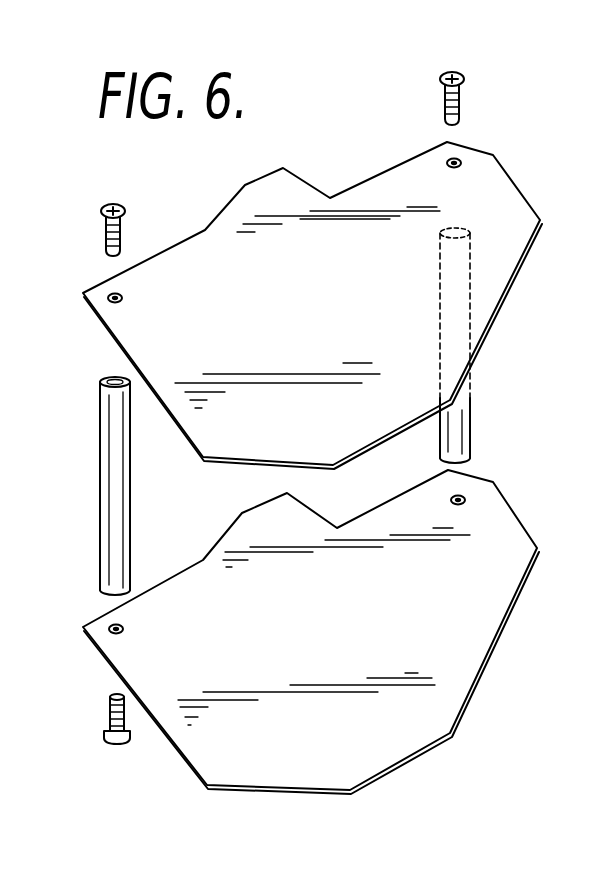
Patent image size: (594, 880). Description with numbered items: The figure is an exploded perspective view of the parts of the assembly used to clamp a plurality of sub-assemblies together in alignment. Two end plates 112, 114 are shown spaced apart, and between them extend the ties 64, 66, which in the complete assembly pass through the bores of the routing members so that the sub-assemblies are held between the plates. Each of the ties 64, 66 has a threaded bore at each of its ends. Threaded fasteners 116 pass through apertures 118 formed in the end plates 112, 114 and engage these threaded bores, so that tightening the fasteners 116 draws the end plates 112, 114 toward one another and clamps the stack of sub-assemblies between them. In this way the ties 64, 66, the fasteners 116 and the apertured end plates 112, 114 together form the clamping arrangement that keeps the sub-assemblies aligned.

The end plate 112 is at (338, 753).
The end plate 114 is at (303, 237).
The threaded fastener 116 is at (125, 232).
The aperture 118 is at (463, 165).
The tie 64 is at (107, 482).
The tie 66 is at (447, 430).